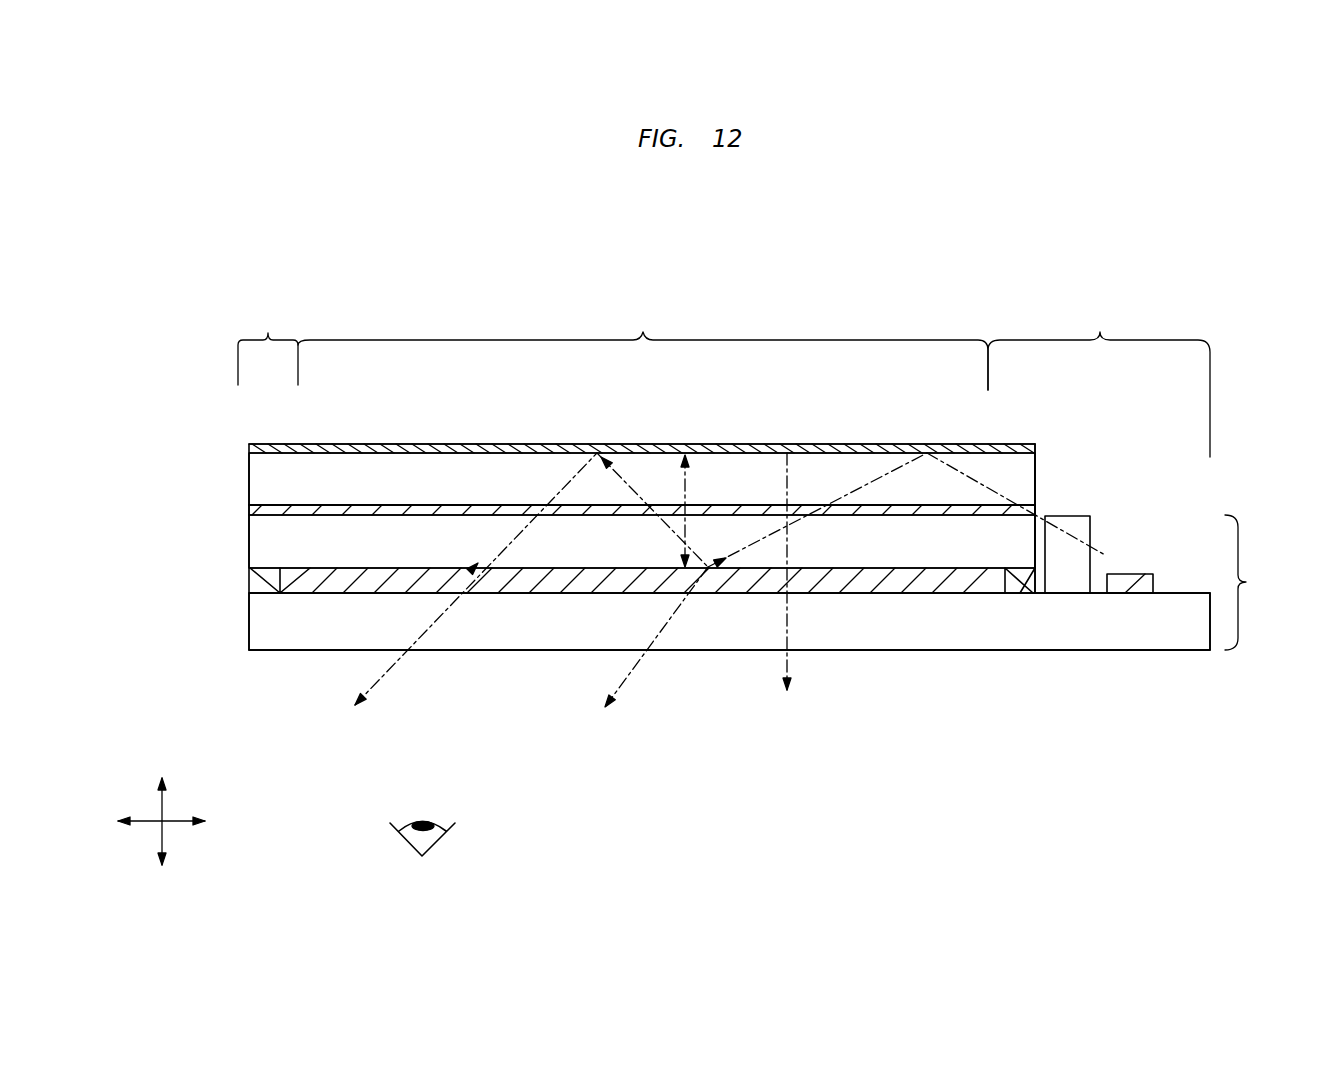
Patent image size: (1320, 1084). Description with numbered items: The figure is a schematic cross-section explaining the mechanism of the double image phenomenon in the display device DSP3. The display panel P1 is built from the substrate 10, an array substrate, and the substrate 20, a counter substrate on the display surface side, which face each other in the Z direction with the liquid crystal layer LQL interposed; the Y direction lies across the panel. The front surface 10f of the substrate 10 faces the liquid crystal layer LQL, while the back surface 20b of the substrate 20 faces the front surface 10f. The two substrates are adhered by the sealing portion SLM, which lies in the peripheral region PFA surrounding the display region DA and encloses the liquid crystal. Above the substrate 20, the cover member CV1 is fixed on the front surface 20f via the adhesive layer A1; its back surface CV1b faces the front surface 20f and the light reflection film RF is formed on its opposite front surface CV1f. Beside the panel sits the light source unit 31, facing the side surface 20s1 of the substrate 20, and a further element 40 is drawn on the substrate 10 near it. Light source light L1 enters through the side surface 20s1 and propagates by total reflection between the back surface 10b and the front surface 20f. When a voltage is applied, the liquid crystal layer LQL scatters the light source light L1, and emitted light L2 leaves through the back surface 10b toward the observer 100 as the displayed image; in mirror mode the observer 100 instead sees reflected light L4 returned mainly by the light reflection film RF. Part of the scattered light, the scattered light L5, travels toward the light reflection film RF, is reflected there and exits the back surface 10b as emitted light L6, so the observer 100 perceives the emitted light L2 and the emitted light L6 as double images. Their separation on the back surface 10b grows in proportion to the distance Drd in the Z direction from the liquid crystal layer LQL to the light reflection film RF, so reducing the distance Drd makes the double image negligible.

The display device DSP3 is at (465, 310).
The peripheral region PFA is at (724, 379).
The display region DA is at (643, 345).
The cover member CV1 is at (272, 476).
The front surface of the cover member CV1f is at (516, 449).
The back surface of the cover member CV1b is at (258, 515).
The light reflection film RF is at (362, 444).
The substrate 20 is at (249, 532).
The front surface of the substrate 20f is at (418, 510).
The back surface of the substrate 20b is at (867, 598).
The side surface of the substrate 20s1 is at (1045, 538).
The adhesive layer A1 is at (252, 510).
The substrate 10 is at (277, 622).
The front surface of the substrate 10f is at (852, 581).
The back surface of the substrate 10b is at (808, 662).
The liquid crystal layer LQL is at (300, 580).
The sealing portion SLM is at (1017, 595).
The light source unit 31 is at (1063, 570).
The circuit element 40 is at (1130, 578).
The display panel P1 is at (1257, 582).
The light source light L1 is at (957, 470).
The emitted light L2 is at (668, 621).
The reflected light L4 is at (798, 486).
The scattered light L5 is at (646, 500).
The emitted light L6 is at (444, 613).
The distance Drd is at (688, 486).
The observer 100 is at (472, 850).
The Z direction Z is at (152, 816).
The Y axis Y is at (163, 837).